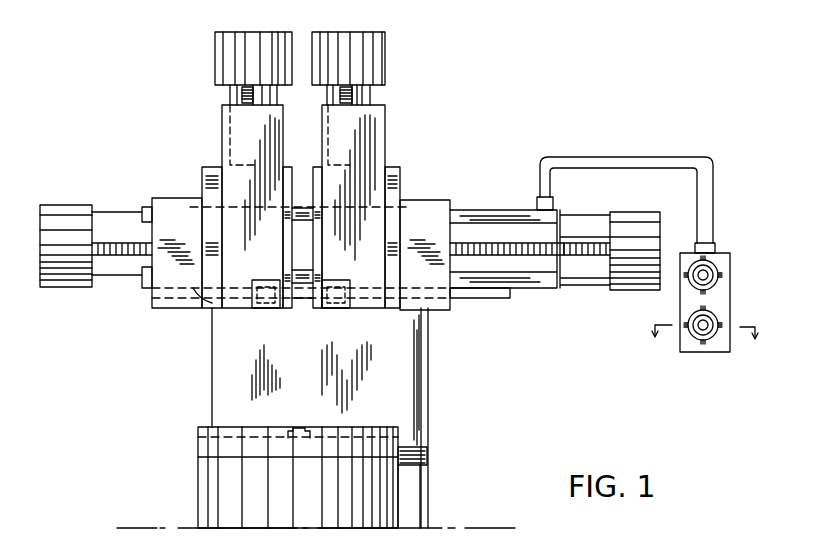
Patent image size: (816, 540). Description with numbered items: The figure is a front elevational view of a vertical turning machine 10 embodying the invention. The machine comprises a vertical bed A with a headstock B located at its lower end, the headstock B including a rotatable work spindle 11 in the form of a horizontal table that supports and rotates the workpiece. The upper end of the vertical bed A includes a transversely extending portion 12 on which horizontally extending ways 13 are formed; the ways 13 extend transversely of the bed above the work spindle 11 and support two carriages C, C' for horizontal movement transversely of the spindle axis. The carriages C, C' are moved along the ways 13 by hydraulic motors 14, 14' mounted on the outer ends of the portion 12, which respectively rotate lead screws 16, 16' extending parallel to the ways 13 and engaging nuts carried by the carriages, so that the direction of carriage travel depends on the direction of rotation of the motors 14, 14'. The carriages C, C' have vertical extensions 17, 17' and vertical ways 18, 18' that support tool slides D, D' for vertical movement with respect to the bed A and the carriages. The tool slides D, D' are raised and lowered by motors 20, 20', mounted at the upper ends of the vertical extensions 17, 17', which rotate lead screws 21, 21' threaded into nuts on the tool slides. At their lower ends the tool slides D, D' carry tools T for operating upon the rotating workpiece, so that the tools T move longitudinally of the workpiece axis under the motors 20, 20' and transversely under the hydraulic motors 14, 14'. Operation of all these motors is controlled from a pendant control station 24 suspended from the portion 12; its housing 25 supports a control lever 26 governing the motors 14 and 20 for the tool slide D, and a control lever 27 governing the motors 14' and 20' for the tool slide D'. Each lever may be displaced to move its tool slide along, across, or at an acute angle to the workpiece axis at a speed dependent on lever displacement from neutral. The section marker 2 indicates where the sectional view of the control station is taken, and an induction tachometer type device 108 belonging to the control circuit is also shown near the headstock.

The motor 20 is at (258, 45).
The motor 20' is at (366, 53).
The vertical way 18 is at (244, 84).
The vertical way 18' is at (360, 100).
The lead screw 21 is at (218, 97).
The lead screw 21' is at (384, 80).
The vertical extension 17 is at (228, 107).
The vertical extension 17' is at (390, 100).
The tool slide D is at (240, 206).
The tool slide D' is at (367, 206).
The carriage C is at (172, 237).
The carriage C' is at (425, 233).
The hydraulic motor 14 is at (66, 234).
The hydraulic motor 14' is at (635, 236).
The lead screw 16 is at (122, 259).
The lead screw 16' is at (582, 276).
The transversely extending portion 12 is at (494, 203).
The horizontal ways 13 is at (516, 208).
The tool T is at (280, 308).
The vertical bed A is at (414, 362).
The vertical turning machine 10 is at (416, 410).
The induction tachometer type device 108 is at (428, 456).
The rotatable work spindle 11 is at (226, 445).
The headstock B is at (225, 490).
The control lever 27 is at (714, 270).
The pendant control station 24 is at (720, 289).
The housing 25 is at (730, 308).
The control lever 26 is at (712, 335).
The section line 2- 2 is at (703, 343).